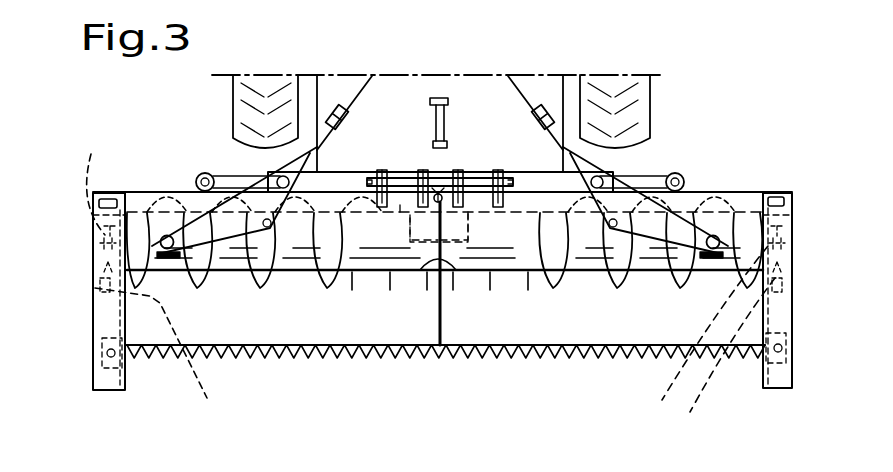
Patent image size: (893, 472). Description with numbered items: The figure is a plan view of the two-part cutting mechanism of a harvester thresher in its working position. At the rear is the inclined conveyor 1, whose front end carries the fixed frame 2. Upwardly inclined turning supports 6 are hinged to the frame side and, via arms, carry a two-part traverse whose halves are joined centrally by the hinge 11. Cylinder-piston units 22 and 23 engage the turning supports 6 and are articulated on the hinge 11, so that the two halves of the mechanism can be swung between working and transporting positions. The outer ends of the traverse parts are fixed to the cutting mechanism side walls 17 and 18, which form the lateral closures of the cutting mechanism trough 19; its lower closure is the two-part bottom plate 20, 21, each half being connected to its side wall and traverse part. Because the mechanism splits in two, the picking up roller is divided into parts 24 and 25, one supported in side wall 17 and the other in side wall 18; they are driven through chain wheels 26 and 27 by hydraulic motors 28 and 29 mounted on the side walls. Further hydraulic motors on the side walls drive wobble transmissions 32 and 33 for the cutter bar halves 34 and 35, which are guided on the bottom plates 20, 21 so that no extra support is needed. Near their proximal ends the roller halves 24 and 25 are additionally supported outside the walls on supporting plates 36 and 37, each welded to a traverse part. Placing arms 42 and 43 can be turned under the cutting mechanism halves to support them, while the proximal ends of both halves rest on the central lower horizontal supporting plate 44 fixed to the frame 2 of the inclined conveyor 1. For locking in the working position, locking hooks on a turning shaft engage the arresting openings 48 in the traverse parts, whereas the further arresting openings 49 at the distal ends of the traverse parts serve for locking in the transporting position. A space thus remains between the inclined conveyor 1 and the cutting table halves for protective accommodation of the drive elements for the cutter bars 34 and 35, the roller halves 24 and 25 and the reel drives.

The inclined conveyor 1 is at (540, 92).
The fixed frame 2 is at (473, 177).
The turning support 6 is at (175, 233).
The hinge 11 is at (442, 186).
The cutting mechanism side wall 17 is at (765, 325).
The cutting mechanism side wall 18 is at (127, 318).
The cutting mechanism trough 19 is at (459, 370).
The bottom plate 20 is at (625, 322).
The bottom plate 21 is at (228, 298).
The cylinder-piston unit 22 is at (553, 108).
The cylinder-piston unit 23 is at (327, 103).
The picking up roller part 24 is at (518, 257).
The picking up roller part 25 is at (305, 260).
The chain wheel 26 is at (706, 340).
The chain wheel 27 is at (92, 179).
The hydraulic motor 28 is at (724, 366).
The hydraulic motor 29 is at (158, 361).
The wobble transmission 32 is at (766, 388).
The wobble transmission 33 is at (100, 390).
The cutter bar half 34 is at (593, 358).
The cutter bar half 35 is at (290, 290).
The supporting plate 36 is at (453, 266).
The supporting plate 37 is at (422, 266).
The placing arm 42 is at (638, 179).
The placing arm 43 is at (225, 179).
The central lower horizontal supporting plate 44 is at (424, 119).
The arresting opening 48 is at (405, 186).
The arresting opening 49 is at (108, 197).